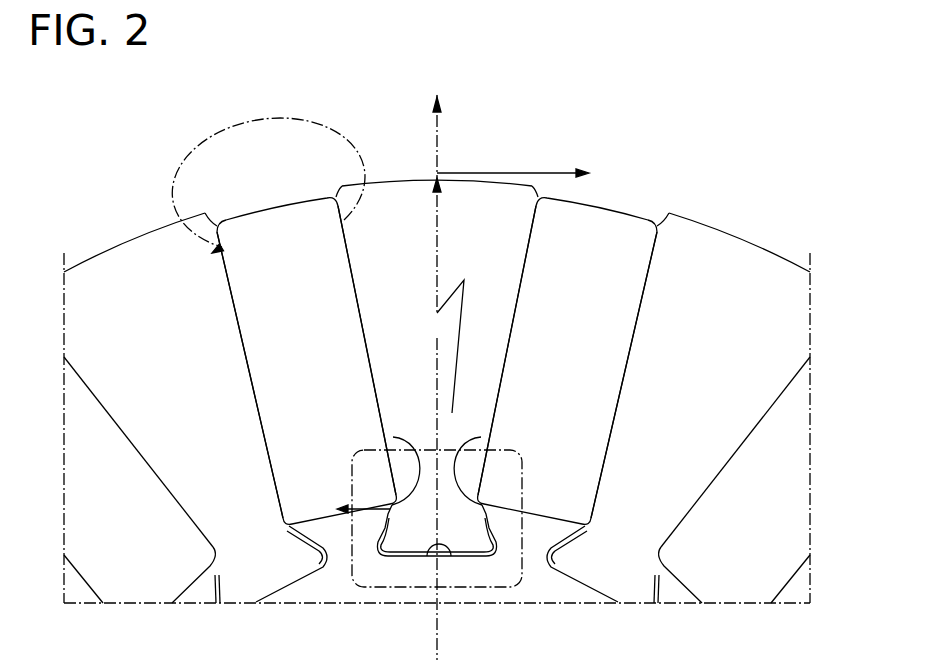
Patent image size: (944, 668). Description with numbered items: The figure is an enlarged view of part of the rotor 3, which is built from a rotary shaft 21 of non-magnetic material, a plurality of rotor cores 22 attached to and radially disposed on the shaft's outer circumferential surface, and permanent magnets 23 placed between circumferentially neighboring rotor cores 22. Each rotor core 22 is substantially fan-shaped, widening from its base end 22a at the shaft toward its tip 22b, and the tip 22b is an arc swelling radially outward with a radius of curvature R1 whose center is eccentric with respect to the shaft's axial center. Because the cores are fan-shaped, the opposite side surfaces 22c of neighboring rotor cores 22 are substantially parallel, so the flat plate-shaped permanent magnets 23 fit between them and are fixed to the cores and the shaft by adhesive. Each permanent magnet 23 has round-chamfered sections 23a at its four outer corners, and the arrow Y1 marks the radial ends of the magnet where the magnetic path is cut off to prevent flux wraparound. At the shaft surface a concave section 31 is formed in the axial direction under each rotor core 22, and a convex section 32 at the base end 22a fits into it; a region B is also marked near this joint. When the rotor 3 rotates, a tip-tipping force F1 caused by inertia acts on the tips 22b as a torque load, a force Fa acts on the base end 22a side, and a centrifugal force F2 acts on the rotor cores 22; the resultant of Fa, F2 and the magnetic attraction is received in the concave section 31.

The rotor 3 is at (240, 157).
The rotary shaft 21 is at (537, 592).
The rotor core 22 is at (160, 237).
The base end 22a is at (212, 553).
The tip 22b is at (122, 242).
The side surface 22c is at (237, 295).
The permanent magnet 23 is at (278, 198).
The round-chamfered section 23a is at (217, 221).
The concave section 31 is at (283, 580).
The convex section 32 is at (312, 537).
The region B is at (530, 452).
The force Fa is at (363, 495).
The tip-tipping force F1 is at (513, 158).
The centrifugal force F2 is at (451, 125).
The radius of curvature R1 is at (421, 223).
The arrow Y1 is at (288, 120).